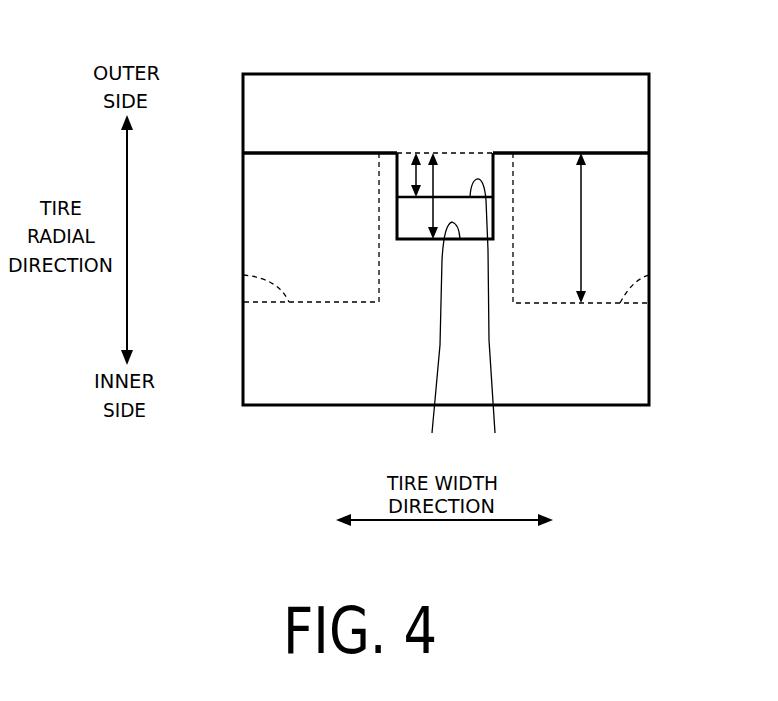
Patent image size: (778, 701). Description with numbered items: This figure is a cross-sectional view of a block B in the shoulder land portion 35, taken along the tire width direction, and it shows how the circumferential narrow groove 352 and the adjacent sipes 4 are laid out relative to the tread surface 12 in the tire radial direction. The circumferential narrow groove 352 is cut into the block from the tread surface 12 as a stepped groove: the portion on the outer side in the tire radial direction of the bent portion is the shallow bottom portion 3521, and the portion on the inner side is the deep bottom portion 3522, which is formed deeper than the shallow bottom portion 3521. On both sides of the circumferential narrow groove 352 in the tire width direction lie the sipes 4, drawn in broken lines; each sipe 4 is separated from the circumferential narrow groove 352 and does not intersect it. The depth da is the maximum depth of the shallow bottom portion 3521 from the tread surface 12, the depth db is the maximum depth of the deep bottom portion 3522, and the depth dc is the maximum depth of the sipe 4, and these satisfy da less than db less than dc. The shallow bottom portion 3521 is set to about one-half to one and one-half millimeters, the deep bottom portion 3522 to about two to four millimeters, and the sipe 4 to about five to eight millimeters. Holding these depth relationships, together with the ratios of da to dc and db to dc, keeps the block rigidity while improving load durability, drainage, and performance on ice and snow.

The shoulder land portion 35 is at (328, 128).
The circumferential narrow groove 352 is at (472, 92).
The shallow bottom portion 3521 is at (493, 322).
The deep bottom portion 3522 is at (433, 343).
The tread surface 12 is at (538, 153).
The sipe 4 is at (243, 275).
The depth of the shallow bottom portion da is at (416, 174).
The depth of the deep bottom portion db is at (433, 210).
The maximum depth of the sipe dc is at (594, 228).